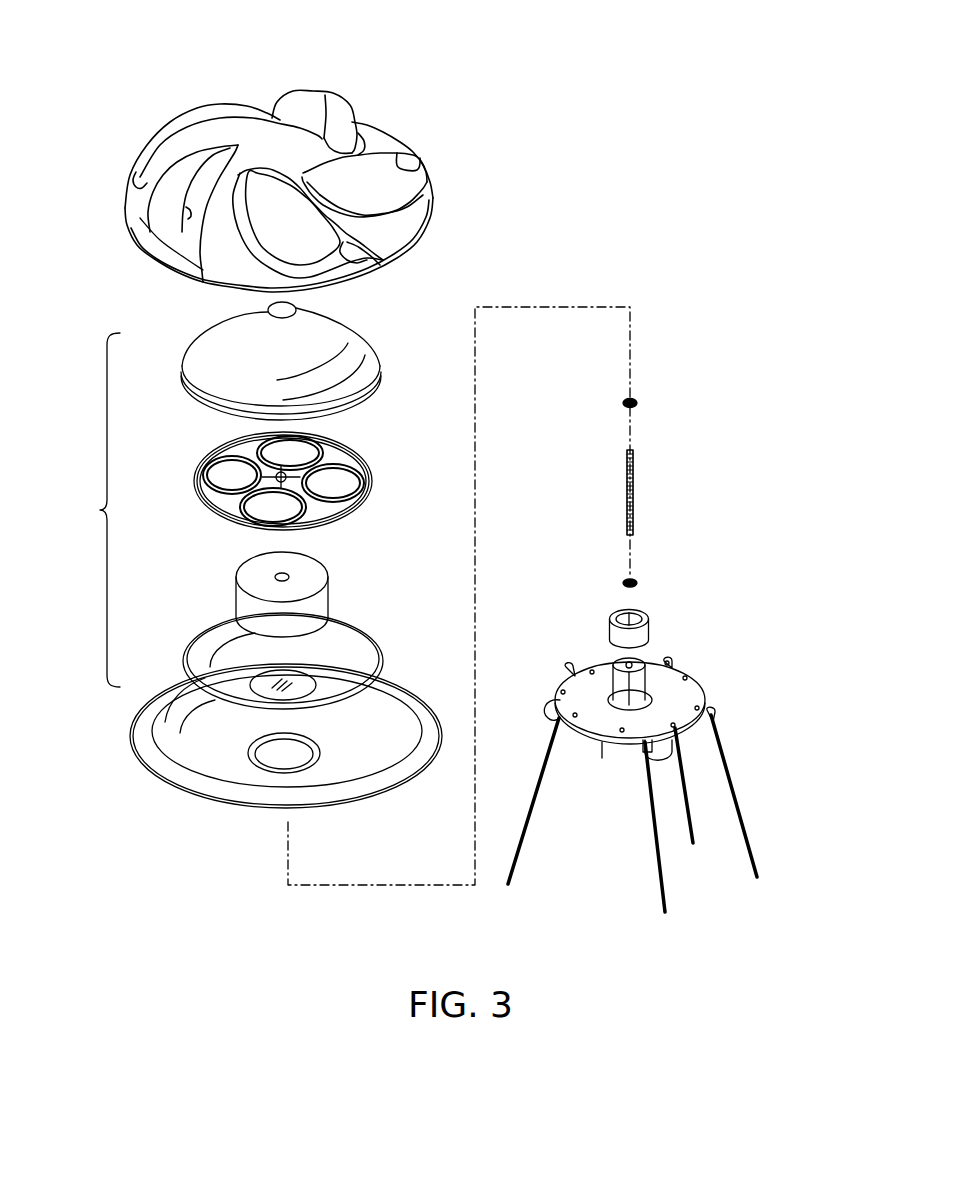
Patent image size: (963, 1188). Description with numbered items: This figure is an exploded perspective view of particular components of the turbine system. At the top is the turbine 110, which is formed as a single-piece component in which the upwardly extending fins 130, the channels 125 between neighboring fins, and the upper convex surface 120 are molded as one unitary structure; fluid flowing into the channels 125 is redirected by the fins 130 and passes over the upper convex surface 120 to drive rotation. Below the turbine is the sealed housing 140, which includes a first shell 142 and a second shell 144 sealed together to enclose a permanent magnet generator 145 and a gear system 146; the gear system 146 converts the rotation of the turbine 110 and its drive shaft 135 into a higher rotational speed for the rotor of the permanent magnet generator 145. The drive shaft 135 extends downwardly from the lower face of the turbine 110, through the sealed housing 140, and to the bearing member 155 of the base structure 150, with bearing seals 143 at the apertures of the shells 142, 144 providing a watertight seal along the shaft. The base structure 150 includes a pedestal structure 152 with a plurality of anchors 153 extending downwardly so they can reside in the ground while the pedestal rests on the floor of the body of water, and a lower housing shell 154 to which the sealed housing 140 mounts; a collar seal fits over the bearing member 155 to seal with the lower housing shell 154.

The turbine 110 is at (140, 157).
The upper convex surface 120 is at (283, 136).
The channels 125 is at (373, 138).
The fins 130 is at (200, 103).
The drive shaft 135 is at (633, 492).
The sealed housing 140 is at (100, 510).
The first shell 142 is at (182, 648).
The bearing seals 143 is at (638, 405).
The second shell 144 is at (182, 380).
The permanent magnet generator 145 is at (235, 600).
The gear system 146 is at (193, 480).
The base structure 150 is at (745, 625).
The pedestal structure 152 is at (700, 697).
The anchors 153 is at (613, 613).
The lower housing shell 154 is at (415, 682).
The bearing member 155 is at (618, 660).